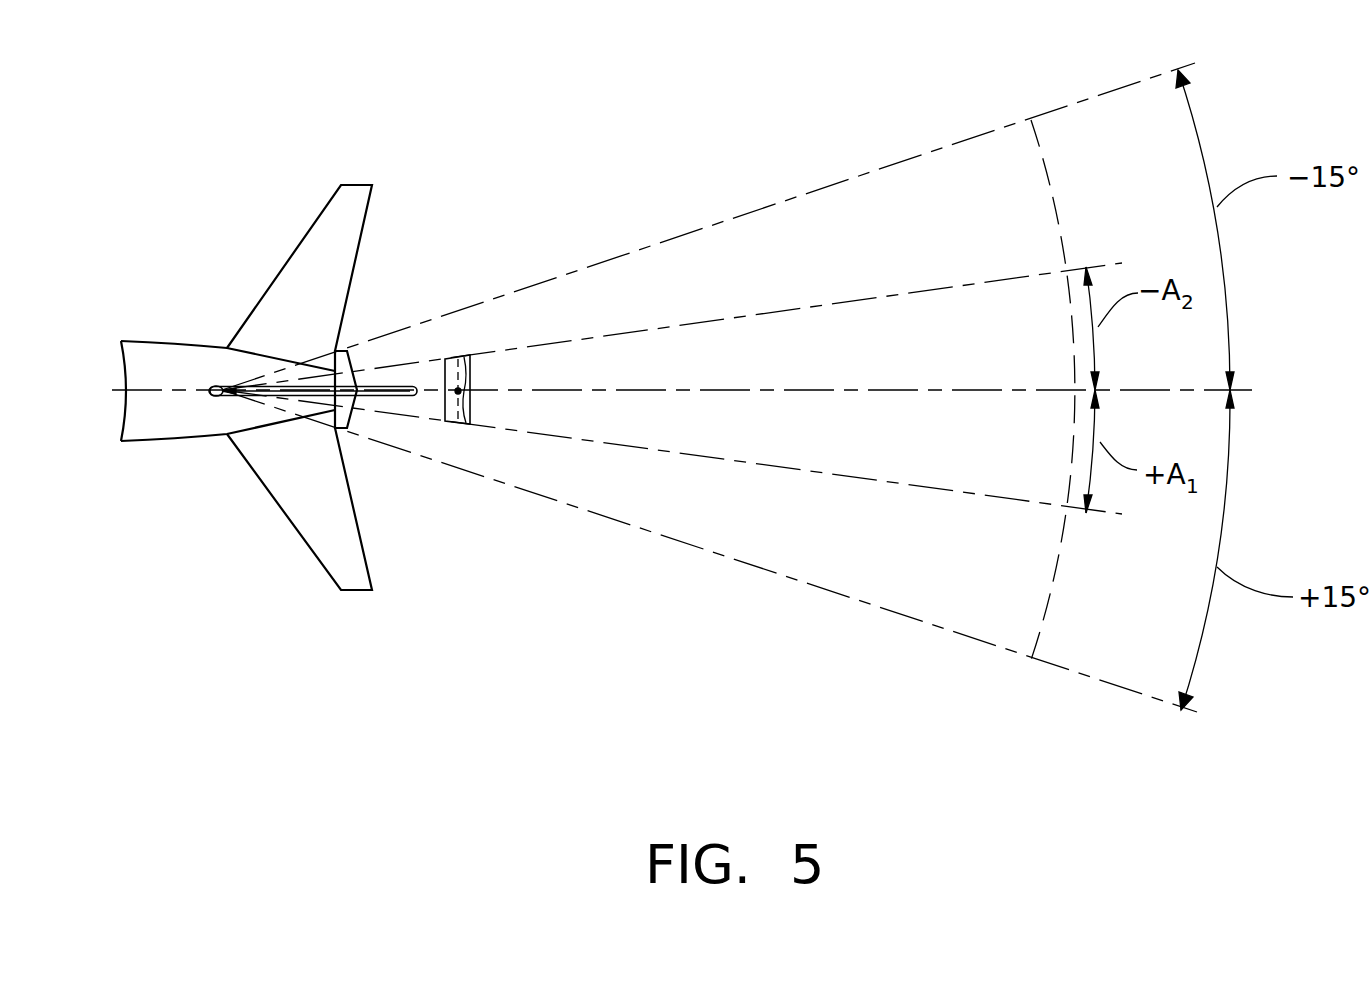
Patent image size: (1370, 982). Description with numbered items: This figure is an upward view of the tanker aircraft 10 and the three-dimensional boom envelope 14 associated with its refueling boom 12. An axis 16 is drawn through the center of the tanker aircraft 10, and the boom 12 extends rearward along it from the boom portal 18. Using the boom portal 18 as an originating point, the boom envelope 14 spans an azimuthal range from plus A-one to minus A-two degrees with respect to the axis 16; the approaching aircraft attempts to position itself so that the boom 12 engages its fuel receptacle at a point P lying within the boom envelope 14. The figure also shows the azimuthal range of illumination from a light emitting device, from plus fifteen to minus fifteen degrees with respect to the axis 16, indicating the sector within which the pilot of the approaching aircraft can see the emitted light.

The tanker aircraft 10 is at (168, 340).
The boom 12 is at (388, 385).
The boom envelope 14 is at (447, 410).
The axis 16 is at (712, 390).
The boom portal 18 is at (217, 403).
The point P is at (458, 391).